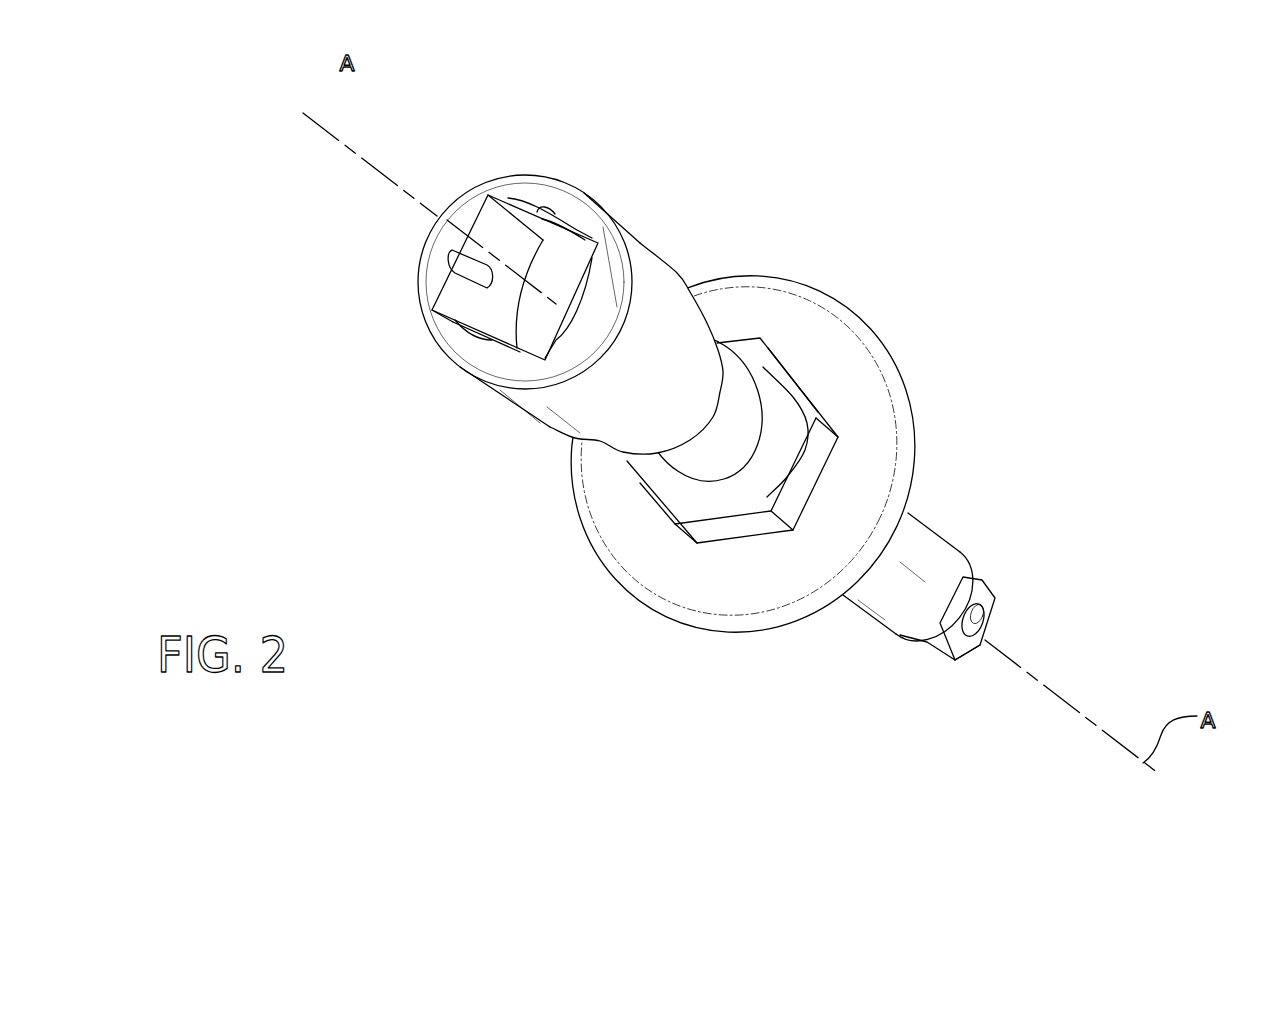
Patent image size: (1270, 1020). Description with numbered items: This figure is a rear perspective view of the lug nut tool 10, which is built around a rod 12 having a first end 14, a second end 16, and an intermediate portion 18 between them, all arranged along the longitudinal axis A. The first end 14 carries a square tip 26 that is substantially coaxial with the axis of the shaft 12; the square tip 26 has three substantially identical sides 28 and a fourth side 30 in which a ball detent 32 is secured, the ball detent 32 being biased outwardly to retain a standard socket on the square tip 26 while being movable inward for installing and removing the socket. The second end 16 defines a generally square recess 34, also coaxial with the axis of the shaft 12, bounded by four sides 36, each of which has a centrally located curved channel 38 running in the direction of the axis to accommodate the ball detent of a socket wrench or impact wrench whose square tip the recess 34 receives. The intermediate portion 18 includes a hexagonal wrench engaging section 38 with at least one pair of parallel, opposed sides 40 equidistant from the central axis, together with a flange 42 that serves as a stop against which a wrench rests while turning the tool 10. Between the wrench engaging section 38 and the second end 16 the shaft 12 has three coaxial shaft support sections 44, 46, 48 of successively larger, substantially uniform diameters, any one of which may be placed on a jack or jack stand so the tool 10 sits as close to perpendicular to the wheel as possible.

The tool 10 is at (950, 215).
The rod 12 is at (915, 542).
The first end 14 is at (945, 730).
The second end 16 is at (404, 453).
The intermediate portion 18 is at (530, 638).
The square tip 26 is at (982, 643).
The sides 28 is at (925, 642).
The fourth side 30 is at (967, 587).
The ball detent 32 is at (977, 617).
The square recess 34 is at (310, 240).
The sides 36 is at (490, 222).
The wrench engaging section 38 is at (490, 270).
The parallel, opposed sides 40 is at (788, 367).
The flange 42 is at (866, 378).
The shaft support section 44 is at (748, 367).
The shaft support section 46 is at (703, 323).
The shaft support section 48 is at (617, 373).